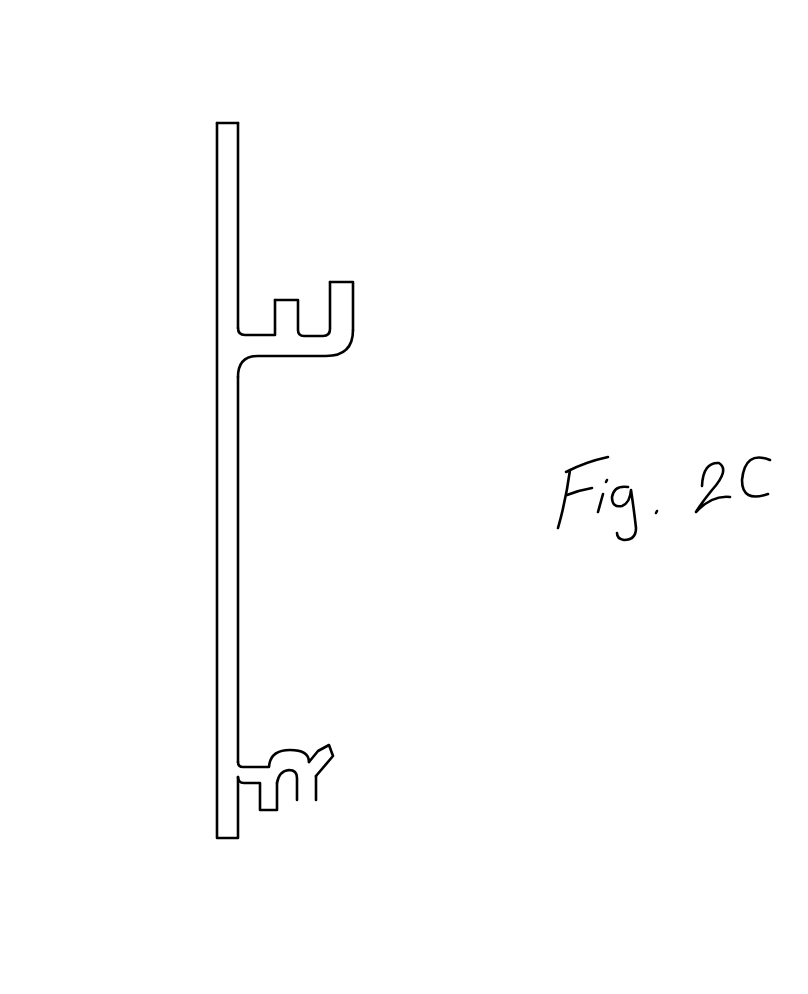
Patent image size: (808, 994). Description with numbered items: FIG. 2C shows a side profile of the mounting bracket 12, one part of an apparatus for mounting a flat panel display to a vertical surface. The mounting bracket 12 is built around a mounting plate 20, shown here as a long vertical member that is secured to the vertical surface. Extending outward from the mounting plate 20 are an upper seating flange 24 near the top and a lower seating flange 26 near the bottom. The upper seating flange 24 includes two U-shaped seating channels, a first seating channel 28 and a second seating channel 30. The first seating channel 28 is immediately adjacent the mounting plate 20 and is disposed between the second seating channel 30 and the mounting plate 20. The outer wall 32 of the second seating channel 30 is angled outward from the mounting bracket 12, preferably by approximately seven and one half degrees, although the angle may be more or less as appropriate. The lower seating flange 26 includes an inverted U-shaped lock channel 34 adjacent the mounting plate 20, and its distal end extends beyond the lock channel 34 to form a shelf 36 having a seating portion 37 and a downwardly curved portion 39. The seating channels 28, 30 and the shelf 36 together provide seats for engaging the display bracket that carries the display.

The mounting bracket 12 is at (230, 123).
The mounting plate 20 is at (226, 188).
The upper seating flange 24 is at (302, 345).
The lower seating flange 26 is at (270, 763).
The first seating channel 28 is at (257, 333).
The second seating channel 30 is at (307, 333).
The outer wall 32 is at (342, 307).
The lock channel 34 is at (257, 793).
The shelf 36 is at (315, 748).
The seating portion 37 is at (297, 800).
The downwardly curved portion 39 is at (316, 800).